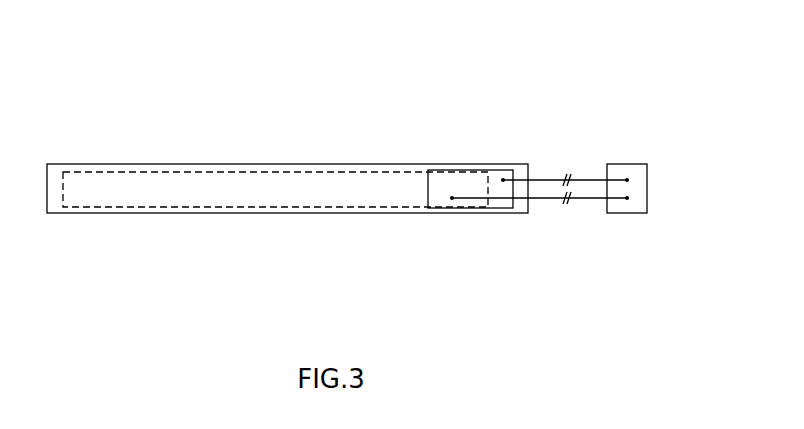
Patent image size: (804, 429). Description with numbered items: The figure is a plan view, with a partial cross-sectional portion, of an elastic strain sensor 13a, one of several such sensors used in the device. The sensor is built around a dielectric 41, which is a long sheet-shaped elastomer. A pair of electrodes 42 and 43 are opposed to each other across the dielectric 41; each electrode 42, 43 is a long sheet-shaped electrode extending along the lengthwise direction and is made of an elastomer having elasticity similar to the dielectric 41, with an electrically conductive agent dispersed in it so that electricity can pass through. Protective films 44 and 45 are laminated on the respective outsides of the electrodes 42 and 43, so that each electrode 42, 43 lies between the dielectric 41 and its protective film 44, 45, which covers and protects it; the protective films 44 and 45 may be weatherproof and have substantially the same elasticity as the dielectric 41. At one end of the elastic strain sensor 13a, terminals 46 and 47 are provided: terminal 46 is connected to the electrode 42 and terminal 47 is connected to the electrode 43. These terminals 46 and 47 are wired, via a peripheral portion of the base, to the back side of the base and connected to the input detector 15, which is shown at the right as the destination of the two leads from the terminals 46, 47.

The elastic strain sensor 13a is at (210, 117).
The input detector 15 is at (635, 160).
The dielectric 41 is at (462, 193).
The electrode 42 is at (445, 208).
The electrode 43 is at (490, 207).
The protective film 44 is at (428, 187).
The protective film 45 is at (525, 165).
The terminal 46 is at (548, 199).
The terminal 47 is at (548, 179).